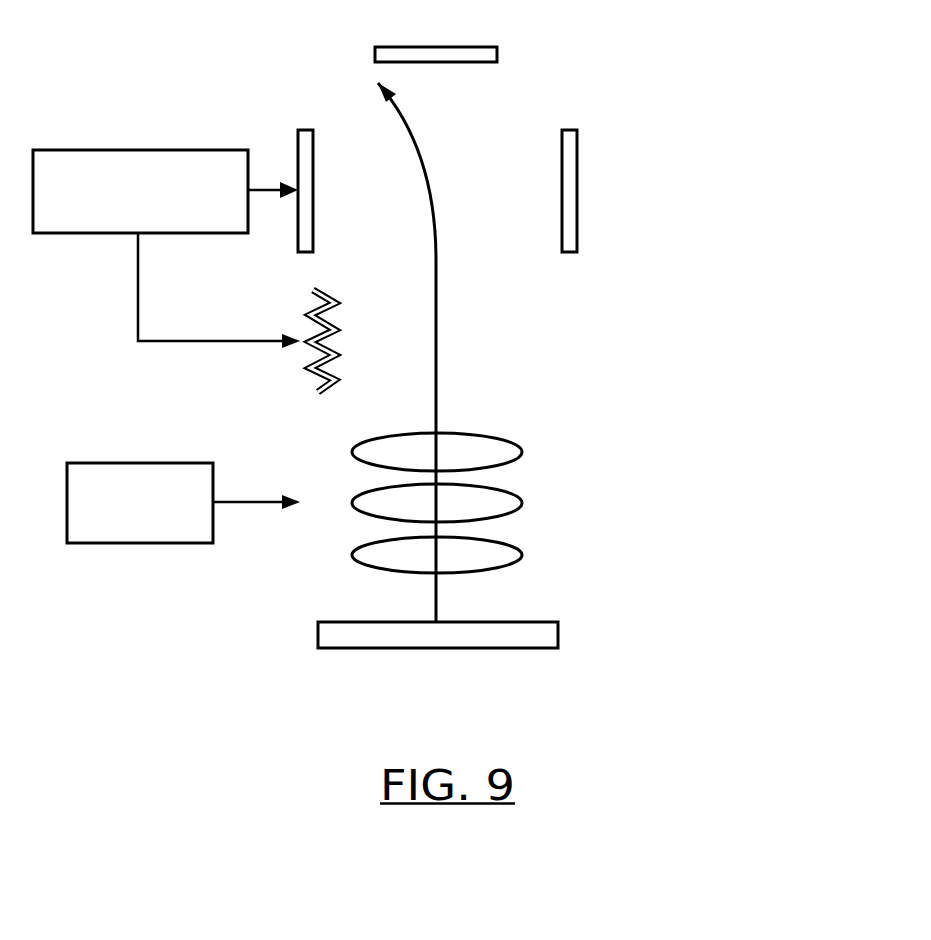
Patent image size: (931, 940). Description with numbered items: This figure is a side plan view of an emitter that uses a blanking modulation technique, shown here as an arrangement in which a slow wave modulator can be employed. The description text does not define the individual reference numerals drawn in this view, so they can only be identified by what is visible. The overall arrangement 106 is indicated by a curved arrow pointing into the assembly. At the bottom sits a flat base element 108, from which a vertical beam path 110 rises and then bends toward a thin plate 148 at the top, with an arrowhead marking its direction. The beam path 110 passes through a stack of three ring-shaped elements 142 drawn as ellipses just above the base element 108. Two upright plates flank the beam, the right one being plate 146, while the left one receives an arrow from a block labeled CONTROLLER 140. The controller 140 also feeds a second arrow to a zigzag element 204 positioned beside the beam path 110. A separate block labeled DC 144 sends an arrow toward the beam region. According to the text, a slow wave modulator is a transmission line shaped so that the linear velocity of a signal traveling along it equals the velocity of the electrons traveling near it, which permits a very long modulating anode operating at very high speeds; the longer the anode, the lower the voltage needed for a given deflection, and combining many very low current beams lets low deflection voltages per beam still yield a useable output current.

The electron beam system 106 is at (690, 363).
The cathode / electron source 108 is at (498, 622).
The electron beam 110 is at (437, 348).
The controller 140 is at (150, 150).
The focusing coils 142 is at (522, 503).
The DC power supply 144 is at (150, 463).
The deflection plate 146 is at (562, 180).
The target plate 148 is at (460, 62).
The heater / resistive element 204 is at (337, 328).